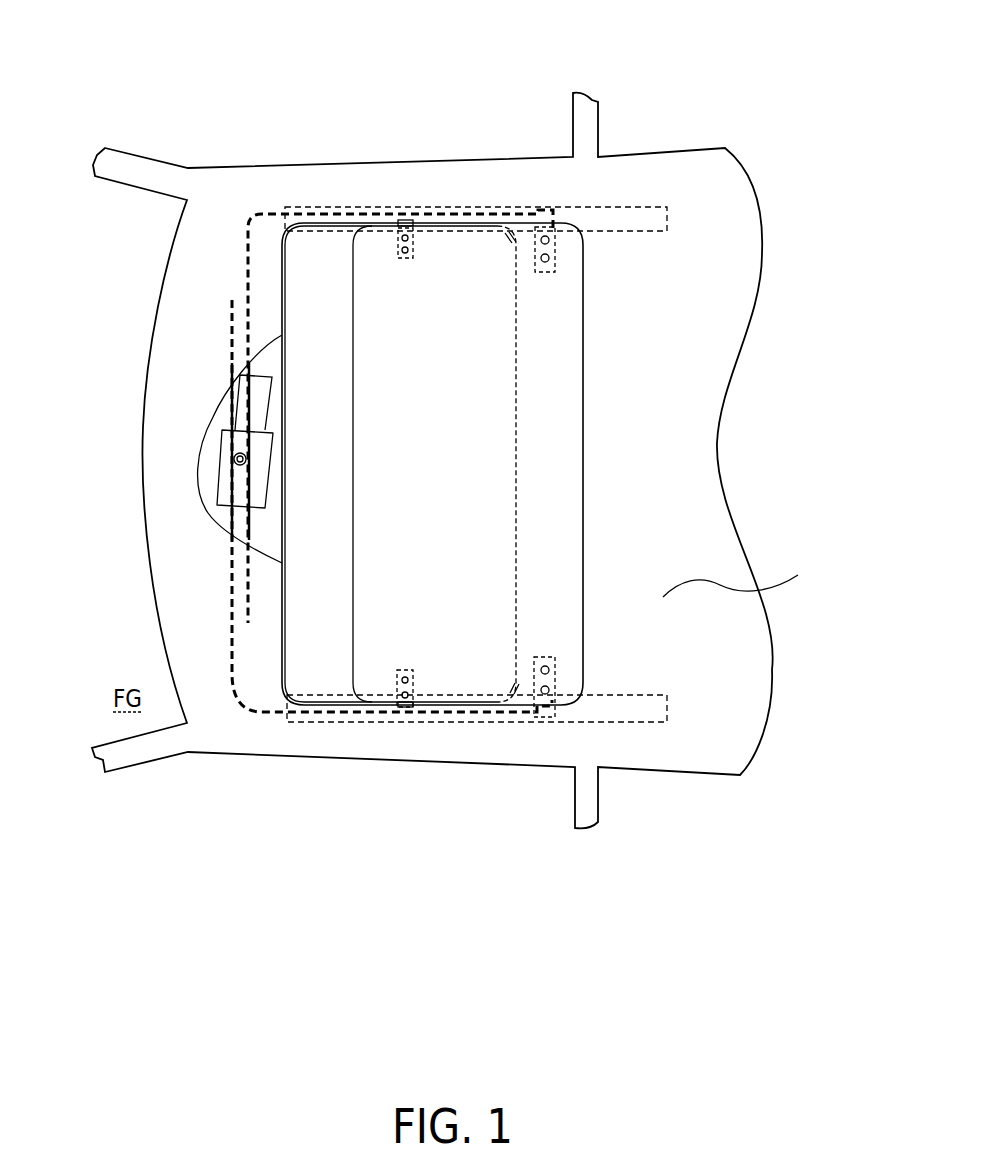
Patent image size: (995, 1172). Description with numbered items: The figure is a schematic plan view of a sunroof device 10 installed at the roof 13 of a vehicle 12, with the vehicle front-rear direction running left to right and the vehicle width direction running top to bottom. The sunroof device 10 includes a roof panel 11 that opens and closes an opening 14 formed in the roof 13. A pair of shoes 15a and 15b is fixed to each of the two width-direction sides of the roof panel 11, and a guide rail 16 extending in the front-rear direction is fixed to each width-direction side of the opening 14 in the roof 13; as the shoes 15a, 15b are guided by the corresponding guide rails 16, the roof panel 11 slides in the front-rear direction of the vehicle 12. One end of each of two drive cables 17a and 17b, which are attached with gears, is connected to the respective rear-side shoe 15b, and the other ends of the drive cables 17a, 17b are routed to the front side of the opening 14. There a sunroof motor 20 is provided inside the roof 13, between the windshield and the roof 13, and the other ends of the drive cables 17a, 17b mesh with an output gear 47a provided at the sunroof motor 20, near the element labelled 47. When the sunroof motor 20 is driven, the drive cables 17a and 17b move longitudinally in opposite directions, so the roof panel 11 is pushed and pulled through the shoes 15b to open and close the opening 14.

The sunroof device 10 is at (436, 182).
The roof panel 11 is at (550, 445).
The vehicle 12 is at (745, 162).
The roof 13 is at (798, 575).
The opening 14 is at (285, 632).
The shoe 15a is at (398, 242).
The shoe 15b is at (555, 245).
The guide rail 16 is at (618, 220).
The drive cable 17a is at (248, 258).
The drive cable 17b is at (228, 675).
The sunroof motor 20 is at (207, 512).
The bolt 47 is at (235, 455).
The output gear 47a is at (218, 478).